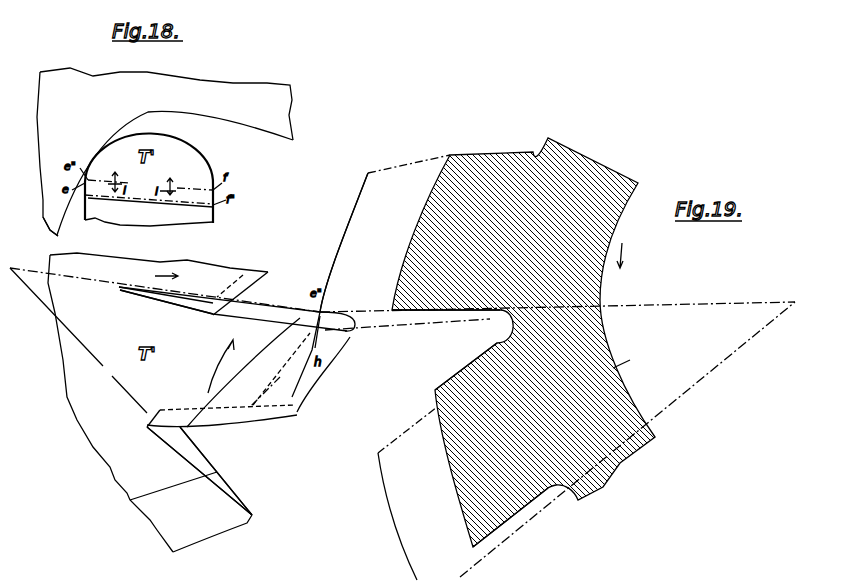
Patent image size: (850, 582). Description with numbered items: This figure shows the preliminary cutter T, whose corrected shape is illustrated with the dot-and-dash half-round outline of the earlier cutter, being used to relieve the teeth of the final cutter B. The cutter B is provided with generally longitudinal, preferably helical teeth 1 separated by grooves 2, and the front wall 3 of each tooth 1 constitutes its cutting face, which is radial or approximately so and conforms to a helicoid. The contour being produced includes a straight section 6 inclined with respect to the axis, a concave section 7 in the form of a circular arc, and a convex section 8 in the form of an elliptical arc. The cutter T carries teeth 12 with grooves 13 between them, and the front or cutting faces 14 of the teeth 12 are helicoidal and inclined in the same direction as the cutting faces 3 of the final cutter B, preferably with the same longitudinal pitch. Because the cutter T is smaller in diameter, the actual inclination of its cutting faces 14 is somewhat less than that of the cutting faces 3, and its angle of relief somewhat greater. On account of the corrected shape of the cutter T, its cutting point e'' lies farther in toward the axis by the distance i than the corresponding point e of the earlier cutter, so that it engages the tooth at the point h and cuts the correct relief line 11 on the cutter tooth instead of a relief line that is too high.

In FIG. 19, the tooth 1 is at (437, 217).
In FIG. 19, the groove 2 is at (440, 368).
In FIG. 19, the cutting face 3 is at (432, 310).
In FIG. 18, the straight section 6 is at (238, 123).
In FIG. 18, the concave section 7 is at (148, 112).
In FIG. 18, the convex section 8 is at (62, 223).
In FIG. 19, the relief line 11 is at (342, 245).
In FIG. 19, the tooth 12 is at (310, 380).
In FIG. 19, the groove 13 is at (237, 472).
In FIG. 19, the cutting face 14 is at (237, 505).
In FIG. 19, the cutter B is at (524, 342).